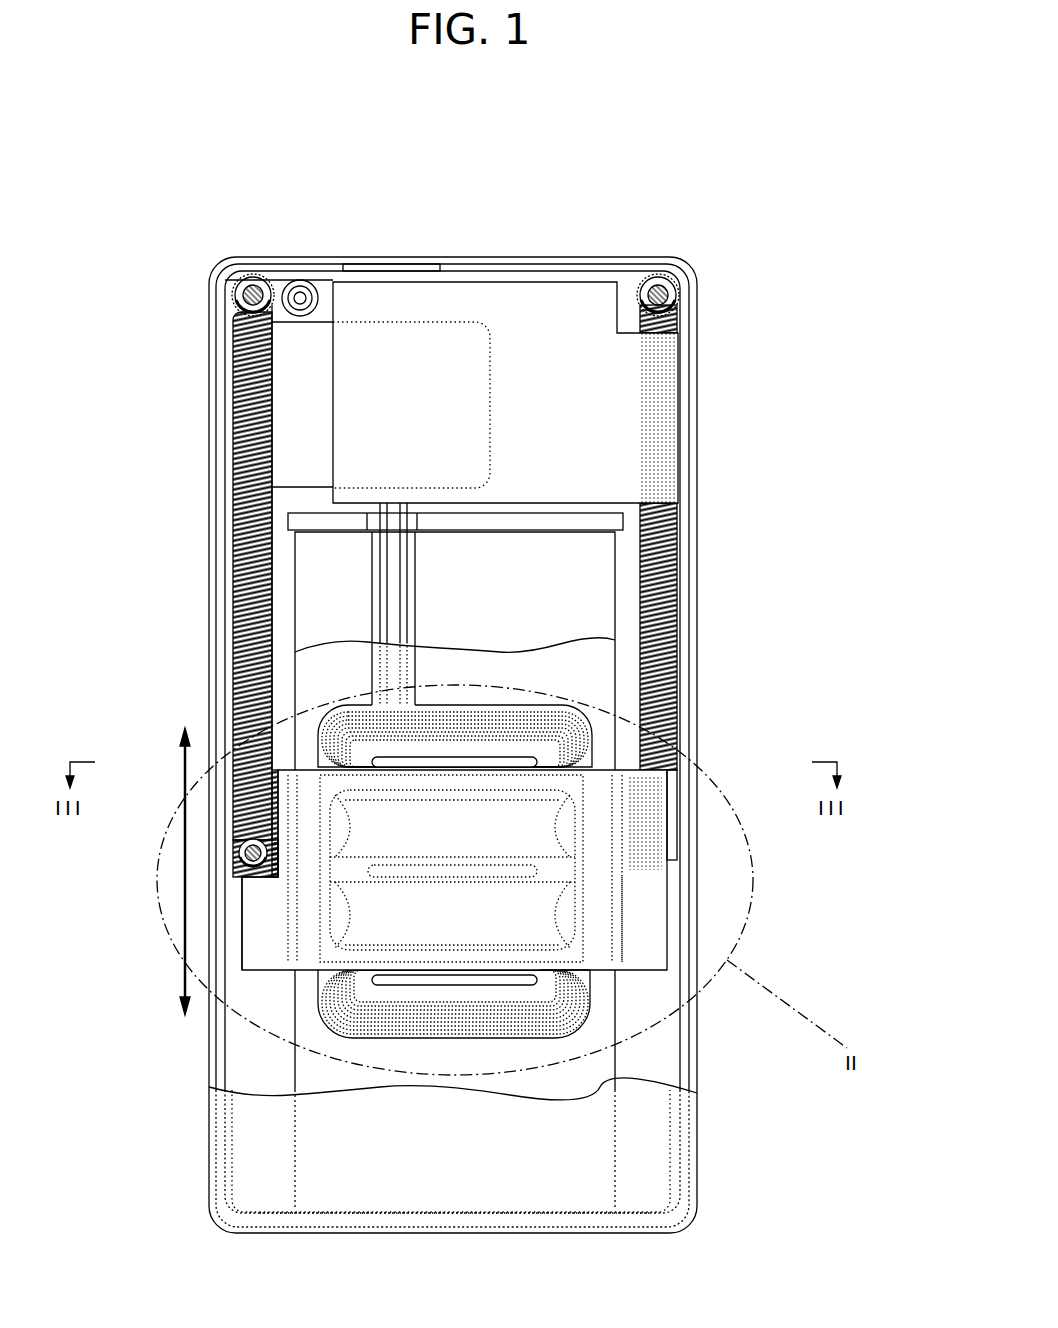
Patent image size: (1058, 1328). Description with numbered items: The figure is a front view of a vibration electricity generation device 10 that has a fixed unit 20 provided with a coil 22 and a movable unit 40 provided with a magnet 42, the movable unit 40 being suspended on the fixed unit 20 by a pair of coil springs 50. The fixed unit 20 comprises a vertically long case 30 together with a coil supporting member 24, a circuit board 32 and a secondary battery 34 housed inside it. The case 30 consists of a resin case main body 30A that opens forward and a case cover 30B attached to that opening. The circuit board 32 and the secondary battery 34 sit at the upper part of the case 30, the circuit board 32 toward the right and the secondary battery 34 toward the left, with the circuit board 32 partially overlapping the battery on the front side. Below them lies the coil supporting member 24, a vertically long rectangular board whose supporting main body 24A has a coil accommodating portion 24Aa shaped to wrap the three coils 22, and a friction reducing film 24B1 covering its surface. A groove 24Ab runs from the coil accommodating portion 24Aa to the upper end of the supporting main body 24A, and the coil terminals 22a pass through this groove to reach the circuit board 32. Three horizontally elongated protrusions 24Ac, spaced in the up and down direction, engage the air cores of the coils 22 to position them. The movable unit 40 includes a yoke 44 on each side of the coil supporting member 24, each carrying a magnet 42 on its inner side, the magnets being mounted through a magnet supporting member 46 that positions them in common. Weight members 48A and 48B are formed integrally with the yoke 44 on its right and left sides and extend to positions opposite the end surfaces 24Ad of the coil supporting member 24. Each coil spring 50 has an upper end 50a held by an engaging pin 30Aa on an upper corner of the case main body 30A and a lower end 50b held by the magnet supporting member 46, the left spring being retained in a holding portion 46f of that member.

The vibration electricity generation device 10 is at (742, 218).
The fixed unit 20 is at (708, 527).
The coil 22 is at (440, 732).
The coil terminals 22a is at (407, 590).
The coil supporting member 24 is at (443, 828).
The supporting main body 24A is at (322, 592).
The coil accommodating portion 24Aa is at (347, 1017).
The groove 24Ab is at (382, 560).
The protrusions 24Ac is at (467, 987).
The end surfaces 24Ad is at (298, 1012).
The friction reducing film 24B1 is at (320, 682).
The case 30 is at (812, 1090).
The case main body 30A is at (697, 1057).
The engaging pin 30Aa is at (240, 297).
The case cover 30B is at (660, 1160).
The circuit board 32 is at (522, 282).
The secondary battery 34 is at (225, 400).
The movable unit 40 is at (461, 902).
The magnet 42 is at (540, 698).
The yoke 44 is at (553, 973).
The magnet supporting member 46 is at (680, 776).
The holding portion 46f is at (243, 858).
The weight member 48A is at (253, 923).
The weight member 48B is at (647, 953).
The coil spring 50 is at (232, 497).
The upper end 50a is at (262, 290).
The lower end 50b is at (240, 860).